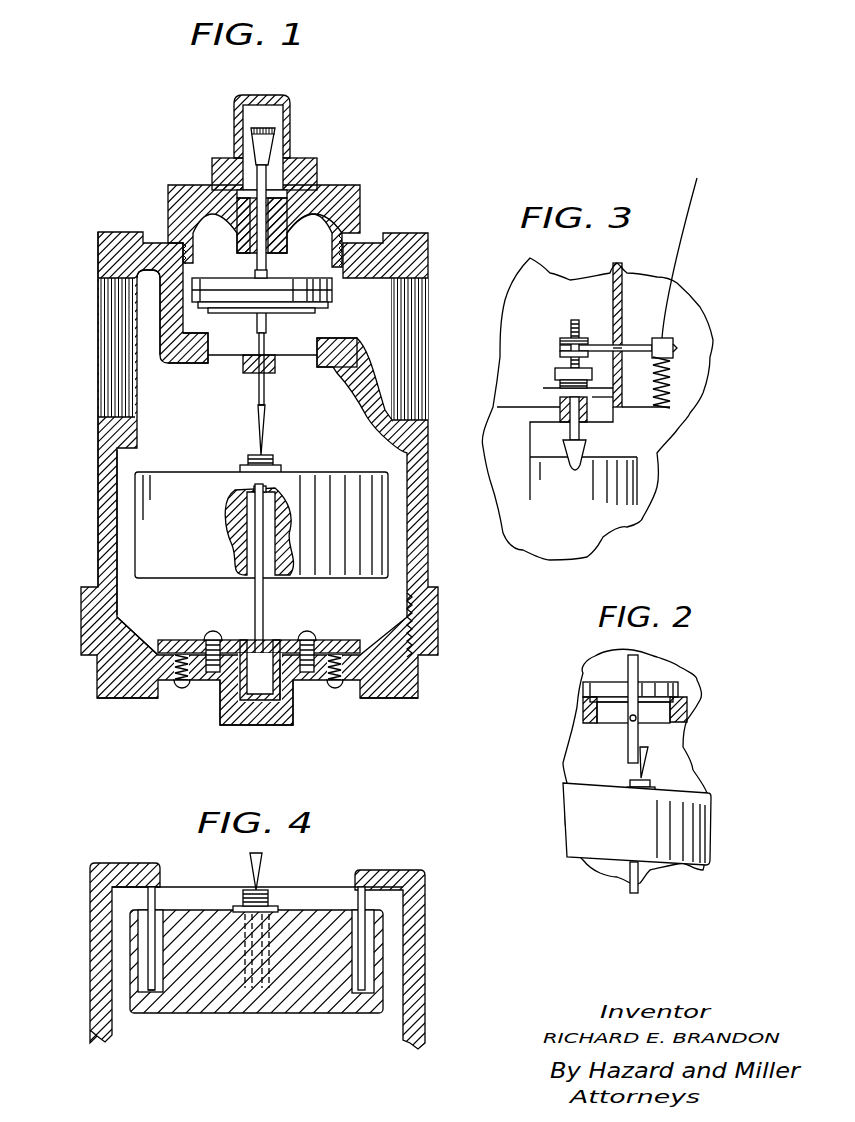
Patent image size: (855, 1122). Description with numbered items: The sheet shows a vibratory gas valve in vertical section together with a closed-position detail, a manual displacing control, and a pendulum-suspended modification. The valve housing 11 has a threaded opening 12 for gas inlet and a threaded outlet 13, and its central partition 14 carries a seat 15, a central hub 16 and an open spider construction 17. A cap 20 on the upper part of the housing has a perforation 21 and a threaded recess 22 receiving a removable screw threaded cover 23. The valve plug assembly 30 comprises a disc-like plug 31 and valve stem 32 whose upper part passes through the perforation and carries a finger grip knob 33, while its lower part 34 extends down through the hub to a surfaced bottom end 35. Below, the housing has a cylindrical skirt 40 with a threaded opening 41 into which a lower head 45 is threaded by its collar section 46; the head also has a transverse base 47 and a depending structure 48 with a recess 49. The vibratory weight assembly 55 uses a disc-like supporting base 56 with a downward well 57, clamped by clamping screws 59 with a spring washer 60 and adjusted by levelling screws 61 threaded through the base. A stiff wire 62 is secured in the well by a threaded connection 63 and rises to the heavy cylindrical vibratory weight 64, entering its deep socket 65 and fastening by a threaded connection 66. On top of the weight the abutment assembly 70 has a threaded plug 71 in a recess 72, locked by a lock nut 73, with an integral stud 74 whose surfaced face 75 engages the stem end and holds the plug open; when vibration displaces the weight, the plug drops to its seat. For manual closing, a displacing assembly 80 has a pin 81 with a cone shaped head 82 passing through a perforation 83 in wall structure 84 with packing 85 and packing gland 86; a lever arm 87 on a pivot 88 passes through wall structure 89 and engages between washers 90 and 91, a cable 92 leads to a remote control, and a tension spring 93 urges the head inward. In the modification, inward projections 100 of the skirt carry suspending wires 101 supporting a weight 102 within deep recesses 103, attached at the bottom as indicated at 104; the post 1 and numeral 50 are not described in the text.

In FIG. 4, the post 1 is at (364, 900).
In FIG. 1, the valve housing 11 is at (122, 220).
In FIG. 1, the threaded opening 12 is at (430, 327).
In FIG. 1, the threaded outlet 13 is at (97, 333).
In FIG. 1, the diaphragm or central partition 14 is at (165, 340).
In FIG. 1, the seat 15 is at (327, 336).
In FIG. 1, the central hub 16 is at (245, 377).
In FIG. 1, the open spider construction 17 is at (218, 365).
In FIG. 1, the cap 20 is at (310, 208).
In FIG. 1, the perforation 21 is at (265, 238).
In FIG. 1, the threaded recess 22 is at (313, 165).
In FIG. 1, the screw threaded cover 23 is at (290, 108).
In FIG. 1, the valve plug assembly 30 is at (292, 278).
In FIG. 2, the valve plug assembly 30 is at (648, 676).
In FIG. 1, the disc-like plug 31 is at (225, 288).
In FIG. 1, the valve stem 32 is at (256, 277).
In FIG. 1, the finger grip knob 33 is at (273, 143).
In FIG. 1, the lower part of the stem 34 is at (267, 333).
In FIG. 1, the surfaced bottom end 35 is at (266, 397).
In FIG. 2, the surfaced bottom end 35 is at (628, 752).
In FIG. 1, the skirt 40 is at (96, 523).
In FIG. 4, the skirt 40 is at (95, 953).
In FIG. 1, the threaded opening 41 is at (410, 617).
In FIG. 1, the lower head 45 is at (147, 704).
In FIG. 1, the internal threaded collar section 46 is at (120, 614).
In FIG. 1, the transverse base 47 is at (350, 668).
In FIG. 1, the depending structure 48 is at (230, 712).
In FIG. 1, the recess 49 is at (292, 692).
In FIG. 1, the spring 50 is at (320, 642).
In FIG. 1, the vibratory weight assembly 55 is at (318, 583).
In FIG. 1, the disc-like supporting base 56 is at (193, 640).
In FIG. 1, the well 57 is at (247, 672).
In FIG. 1, the clamping screws 59 is at (303, 632).
In FIG. 1, the spring washer 60 is at (212, 630).
In FIG. 1, the levelling screws 61 is at (178, 668).
In FIG. 1, the stiff wire 62 is at (256, 604).
In FIG. 2, the stiff wire 62 is at (633, 875).
In FIG. 1, the screw threaded connection 63 is at (256, 690).
In FIG. 1, the vibratory weight 64 is at (318, 532).
In FIG. 3, the vibratory weight 64 is at (562, 497).
In FIG. 2, the vibratory weight 64 is at (614, 840).
In FIG. 1, the deep socket 65 is at (247, 532).
In FIG. 1, the screw threaded connection 66 is at (272, 492).
In FIG. 1, the supporting and adjustable abutment assembly 70 is at (235, 458).
In FIG. 4, the supporting and adjustable abutment assembly 70 is at (268, 886).
In FIG. 1, the screw threaded plug 71 is at (274, 459).
In FIG. 1, the recess 72 is at (248, 482).
In FIG. 1, the lock nut 73 is at (280, 470).
In FIG. 1, the stud 74 is at (263, 427).
In FIG. 2, the stud 74 is at (647, 760).
In FIG. 4, the stud 74 is at (258, 860).
In FIG. 1, the surfaced face 75 is at (258, 404).
In FIG. 3, the displacing assembly 80 is at (602, 430).
In FIG. 3, the displacing pin or rod 81 is at (570, 428).
In FIG. 3, the cone shaped displacing head 82 is at (578, 462).
In FIG. 3, the perforation 83 is at (560, 413).
In FIG. 3, the wall structure 84 is at (552, 396).
In FIG. 3, the packing 85 is at (613, 400).
In FIG. 3, the packing gland 86 is at (558, 370).
In FIG. 3, the pivoted lever arm 87 is at (625, 343).
In FIG. 3, the pivot 88 is at (615, 342).
In FIG. 3, the wall structure 89 is at (623, 273).
In FIG. 3, the lower threaded washer 90 is at (563, 345).
In FIG. 3, the upper threaded washer 91 is at (566, 337).
In FIG. 3, the cable 92 is at (687, 253).
In FIG. 3, the tension spring 93 is at (667, 376).
In FIG. 4, the inward projections 100 is at (133, 886).
In FIG. 4, the suspending wires 101 is at (154, 905).
In FIG. 4, the weight 102 is at (220, 983).
In FIG. 4, the recesses 103 is at (185, 916).
In FIG. 4, the attachment 104 is at (150, 992).